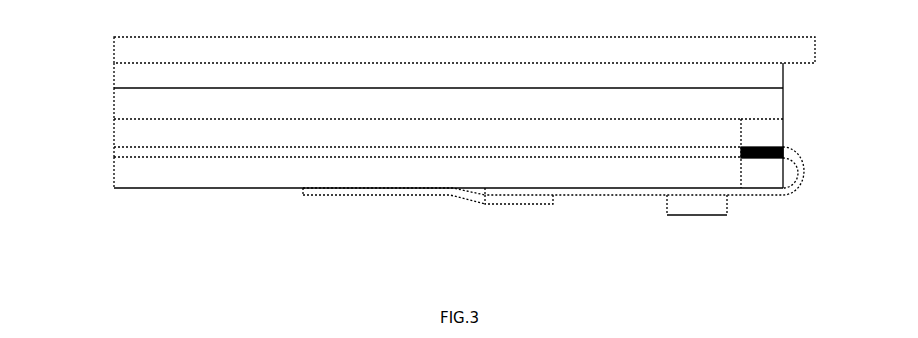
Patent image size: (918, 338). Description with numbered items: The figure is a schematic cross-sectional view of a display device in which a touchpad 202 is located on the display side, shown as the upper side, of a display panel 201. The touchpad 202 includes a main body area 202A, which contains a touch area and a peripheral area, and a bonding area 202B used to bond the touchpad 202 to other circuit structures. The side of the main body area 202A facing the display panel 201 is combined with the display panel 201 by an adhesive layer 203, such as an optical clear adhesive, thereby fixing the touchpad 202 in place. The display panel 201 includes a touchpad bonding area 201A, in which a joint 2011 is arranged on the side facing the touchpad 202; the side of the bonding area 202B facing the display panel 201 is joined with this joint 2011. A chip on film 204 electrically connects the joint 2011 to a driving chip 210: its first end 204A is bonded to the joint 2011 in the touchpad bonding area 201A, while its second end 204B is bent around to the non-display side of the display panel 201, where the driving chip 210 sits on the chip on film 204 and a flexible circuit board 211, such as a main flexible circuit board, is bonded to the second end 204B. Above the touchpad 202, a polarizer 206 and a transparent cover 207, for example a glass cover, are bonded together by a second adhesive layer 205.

The transparent cover 207 is at (120, 42).
The second adhesive layer 205 is at (120, 72).
The polarizer 206 is at (120, 100).
The touchpad 202 is at (122, 128).
The main body area 202A is at (714, 124).
The bonding area 202B is at (773, 128).
The adhesive layer 203 is at (122, 153).
The display panel 201 is at (122, 175).
The touchpad bonding area 201A is at (767, 182).
The joint 2011 is at (785, 148).
The chip on film 204 is at (797, 185).
The first end of the chip on film 204A is at (786, 153).
The second end of the chip on film 204B is at (507, 190).
The flexible circuit board 211 is at (520, 200).
The driving chip 210 is at (697, 207).